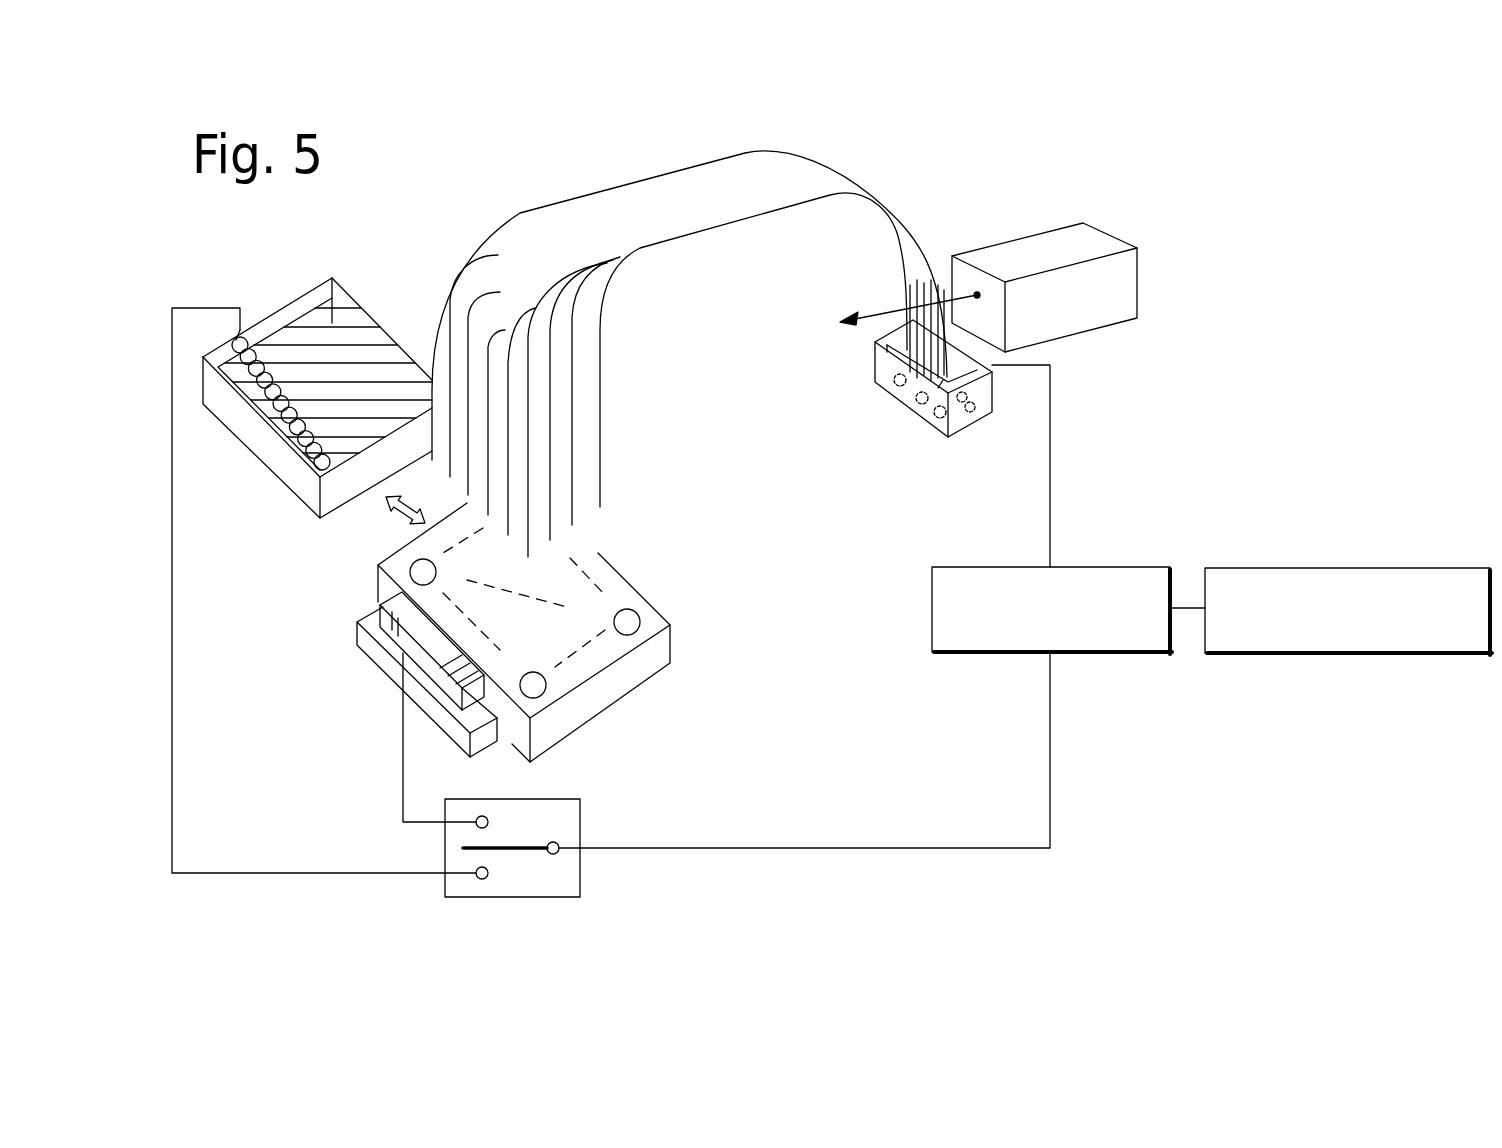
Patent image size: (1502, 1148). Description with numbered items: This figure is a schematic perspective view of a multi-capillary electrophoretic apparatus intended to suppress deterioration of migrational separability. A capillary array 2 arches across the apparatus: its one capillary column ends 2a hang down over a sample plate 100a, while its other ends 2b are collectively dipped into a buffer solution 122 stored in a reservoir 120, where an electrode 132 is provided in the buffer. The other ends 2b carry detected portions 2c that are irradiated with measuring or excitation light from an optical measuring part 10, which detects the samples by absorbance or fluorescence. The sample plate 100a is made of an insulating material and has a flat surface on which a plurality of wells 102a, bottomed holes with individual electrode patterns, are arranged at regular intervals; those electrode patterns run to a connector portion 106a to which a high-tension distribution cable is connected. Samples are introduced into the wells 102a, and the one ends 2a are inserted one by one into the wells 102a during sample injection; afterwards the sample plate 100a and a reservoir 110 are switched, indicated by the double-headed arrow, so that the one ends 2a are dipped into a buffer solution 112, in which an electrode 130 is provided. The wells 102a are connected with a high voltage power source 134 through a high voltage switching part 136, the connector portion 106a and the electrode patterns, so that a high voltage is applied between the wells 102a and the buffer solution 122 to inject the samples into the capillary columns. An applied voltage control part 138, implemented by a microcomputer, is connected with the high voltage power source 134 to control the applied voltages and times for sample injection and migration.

The capillary array 2 is at (580, 208).
The one capillary column ends 2a is at (602, 495).
The other ends of the capillary array 2b is at (903, 365).
The detected portions 2c is at (907, 290).
The optical measuring part 10 is at (1025, 250).
The sample plate 100a is at (627, 573).
The wells 102a is at (630, 618).
The connector portion 106a is at (433, 655).
The reservoir 110 is at (357, 298).
The buffer solution 112 is at (312, 348).
The reservoir 120 is at (890, 395).
The buffer solution 122 is at (915, 402).
The electrode 130 is at (283, 433).
The electrode 132 is at (973, 397).
The high voltage power source 134 is at (1092, 567).
The high voltage switching part 136 is at (580, 807).
The applied voltage control part 138 is at (1413, 568).